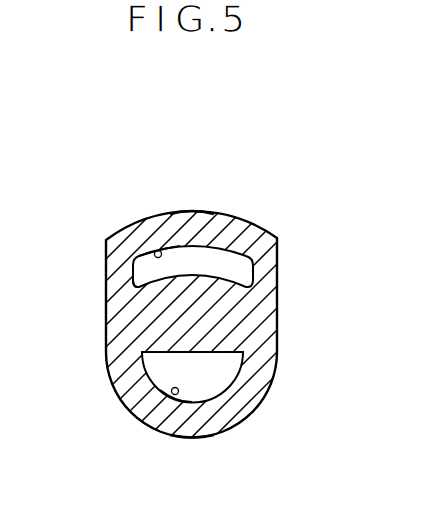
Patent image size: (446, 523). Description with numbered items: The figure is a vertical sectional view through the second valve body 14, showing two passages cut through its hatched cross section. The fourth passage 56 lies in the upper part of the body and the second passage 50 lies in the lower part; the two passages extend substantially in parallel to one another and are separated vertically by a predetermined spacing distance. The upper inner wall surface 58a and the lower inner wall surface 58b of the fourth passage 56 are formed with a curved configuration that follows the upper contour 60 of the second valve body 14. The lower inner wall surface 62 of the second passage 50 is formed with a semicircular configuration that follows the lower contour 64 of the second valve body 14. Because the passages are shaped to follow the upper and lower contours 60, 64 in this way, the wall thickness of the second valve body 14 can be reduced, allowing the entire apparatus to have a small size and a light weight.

The second valve body 14 is at (268, 297).
The second passage 50 is at (216, 371).
The fourth passage 56 is at (208, 216).
The upper inner wall surface 58a is at (157, 250).
The lower inner wall surface 58b is at (133, 282).
The upper contour 60 is at (199, 258).
The lower inner wall surface 62 is at (176, 394).
The lower contour 64 is at (197, 438).